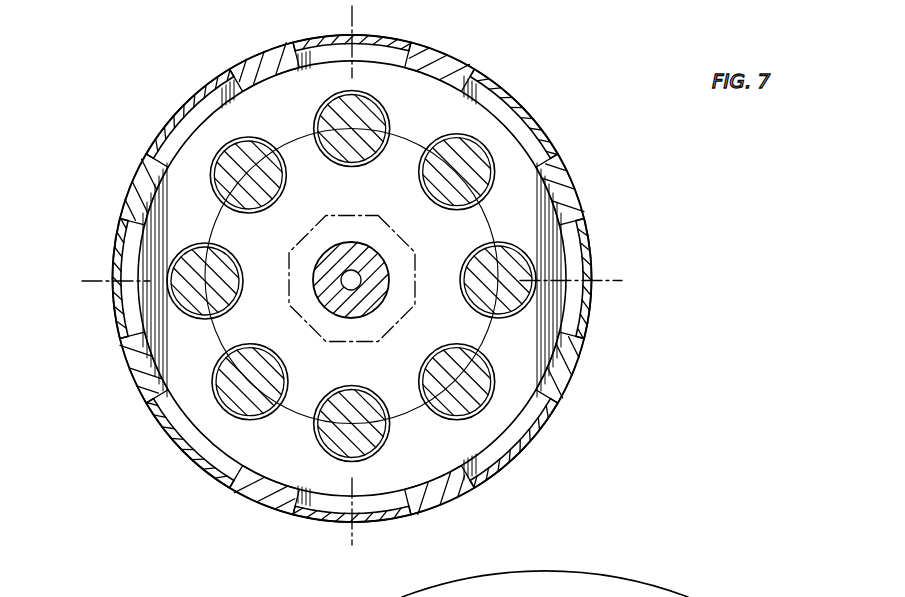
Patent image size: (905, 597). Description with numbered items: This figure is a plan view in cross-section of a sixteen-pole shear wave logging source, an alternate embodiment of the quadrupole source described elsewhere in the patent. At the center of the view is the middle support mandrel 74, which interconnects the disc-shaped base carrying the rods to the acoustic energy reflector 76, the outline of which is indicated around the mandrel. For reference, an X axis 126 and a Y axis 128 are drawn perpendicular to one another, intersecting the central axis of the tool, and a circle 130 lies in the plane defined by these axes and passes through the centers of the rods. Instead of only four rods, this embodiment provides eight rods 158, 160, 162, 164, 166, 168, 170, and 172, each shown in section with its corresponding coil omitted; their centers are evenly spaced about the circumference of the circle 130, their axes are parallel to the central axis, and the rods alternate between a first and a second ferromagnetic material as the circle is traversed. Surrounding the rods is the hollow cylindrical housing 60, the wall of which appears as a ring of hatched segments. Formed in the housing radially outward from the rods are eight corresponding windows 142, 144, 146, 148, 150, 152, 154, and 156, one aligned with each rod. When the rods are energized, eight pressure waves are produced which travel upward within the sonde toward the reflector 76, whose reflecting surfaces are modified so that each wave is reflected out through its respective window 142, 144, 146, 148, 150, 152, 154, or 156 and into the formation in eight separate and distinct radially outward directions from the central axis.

The hollow cylindrical housing 60 is at (250, 63).
The middle support mandrel 74 is at (363, 253).
The acoustic energy reflector 76 is at (405, 315).
The X axis 126 is at (75, 279).
The Y axis 128 is at (352, 28).
The circle 130 is at (417, 137).
The window 142 is at (128, 228).
The window 144 is at (172, 435).
The window 146 is at (313, 519).
The window 148 is at (516, 463).
The window 150 is at (592, 265).
The window 152 is at (556, 152).
The window 154 is at (318, 42).
The window 156 is at (162, 138).
The rod 158 is at (190, 298).
The rod 160 is at (233, 413).
The rod 162 is at (375, 470).
The rod 164 is at (492, 407).
The rod 166 is at (520, 300).
The rod 168 is at (473, 162).
The rod 170 is at (333, 118).
The rod 172 is at (228, 150).